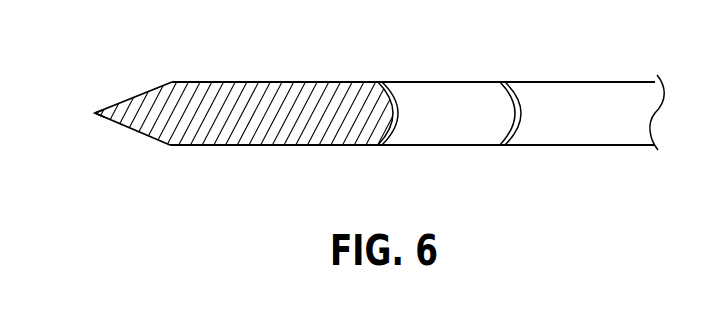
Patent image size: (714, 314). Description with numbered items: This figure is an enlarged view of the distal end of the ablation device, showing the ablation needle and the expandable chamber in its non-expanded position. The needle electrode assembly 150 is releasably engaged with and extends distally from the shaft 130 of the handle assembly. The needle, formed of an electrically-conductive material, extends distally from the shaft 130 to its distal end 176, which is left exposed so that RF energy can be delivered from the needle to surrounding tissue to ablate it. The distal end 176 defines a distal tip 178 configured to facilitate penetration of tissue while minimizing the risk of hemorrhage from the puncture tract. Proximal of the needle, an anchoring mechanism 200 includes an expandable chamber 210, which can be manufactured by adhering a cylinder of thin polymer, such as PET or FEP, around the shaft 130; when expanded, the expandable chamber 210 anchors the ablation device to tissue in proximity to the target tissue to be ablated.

The shaft 130 is at (615, 80).
The needle electrode assembly 150 is at (275, 80).
The distal end 176 is at (118, 73).
The distal tip 178 is at (95, 113).
The anchoring mechanism 200 is at (437, 80).
The expandable chamber 210 is at (433, 145).